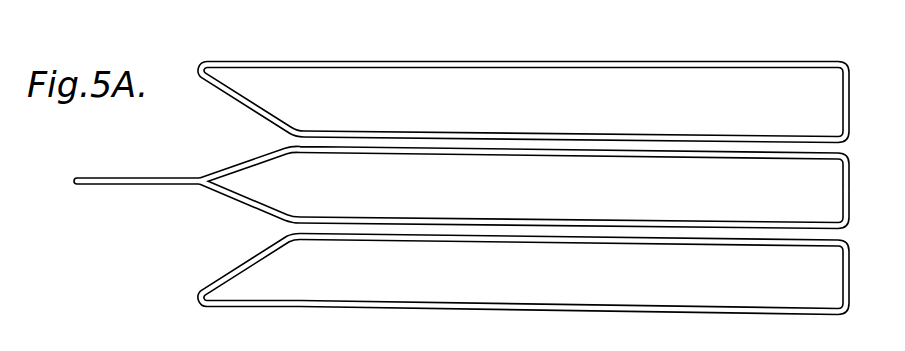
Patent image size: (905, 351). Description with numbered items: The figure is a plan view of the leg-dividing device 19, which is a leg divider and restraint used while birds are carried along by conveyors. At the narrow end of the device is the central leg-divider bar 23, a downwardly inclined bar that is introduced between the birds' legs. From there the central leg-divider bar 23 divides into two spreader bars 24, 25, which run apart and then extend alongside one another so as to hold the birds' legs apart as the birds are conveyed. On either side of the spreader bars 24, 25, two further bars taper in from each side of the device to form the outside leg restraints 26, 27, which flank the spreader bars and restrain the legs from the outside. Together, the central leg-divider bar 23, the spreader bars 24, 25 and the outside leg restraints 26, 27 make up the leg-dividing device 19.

The leg-dividing device 19 is at (442, 56).
The central leg-divider bar 23 is at (94, 183).
The spreader bar 24 is at (226, 165).
The spreader bar 25 is at (228, 200).
The outside leg restraint 26 is at (513, 236).
The outside leg restraint 27 is at (315, 136).